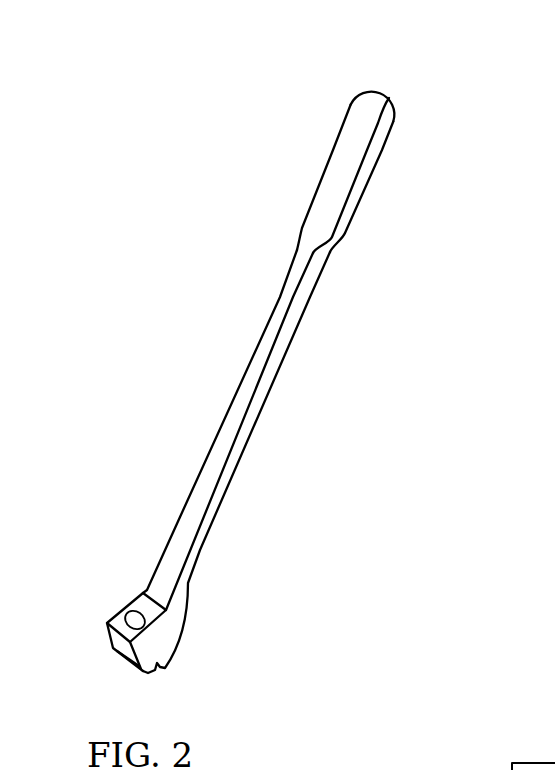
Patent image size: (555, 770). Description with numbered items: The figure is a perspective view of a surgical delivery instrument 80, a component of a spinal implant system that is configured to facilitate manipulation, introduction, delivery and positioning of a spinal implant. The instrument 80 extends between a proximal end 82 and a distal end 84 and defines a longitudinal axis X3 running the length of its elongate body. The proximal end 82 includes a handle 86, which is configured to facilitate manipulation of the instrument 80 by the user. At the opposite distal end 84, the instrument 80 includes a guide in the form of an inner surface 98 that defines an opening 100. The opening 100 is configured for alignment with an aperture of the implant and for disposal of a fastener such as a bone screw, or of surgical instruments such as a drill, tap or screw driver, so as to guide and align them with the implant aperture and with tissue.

The surgical delivery instrument 80 is at (434, 236).
The proximal end 82 is at (389, 110).
The handle 86 is at (357, 193).
The distal end 84 is at (182, 621).
The inner surface 98 is at (106, 613).
The opening 100 is at (138, 600).
The longitudinal axis X3 is at (350, 157).